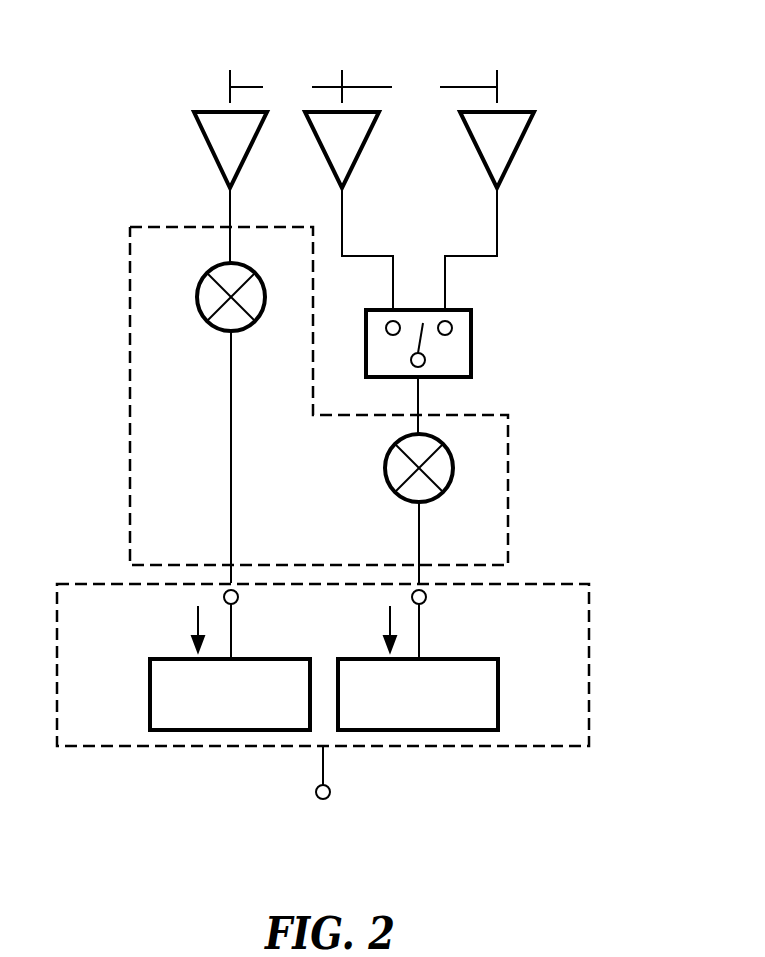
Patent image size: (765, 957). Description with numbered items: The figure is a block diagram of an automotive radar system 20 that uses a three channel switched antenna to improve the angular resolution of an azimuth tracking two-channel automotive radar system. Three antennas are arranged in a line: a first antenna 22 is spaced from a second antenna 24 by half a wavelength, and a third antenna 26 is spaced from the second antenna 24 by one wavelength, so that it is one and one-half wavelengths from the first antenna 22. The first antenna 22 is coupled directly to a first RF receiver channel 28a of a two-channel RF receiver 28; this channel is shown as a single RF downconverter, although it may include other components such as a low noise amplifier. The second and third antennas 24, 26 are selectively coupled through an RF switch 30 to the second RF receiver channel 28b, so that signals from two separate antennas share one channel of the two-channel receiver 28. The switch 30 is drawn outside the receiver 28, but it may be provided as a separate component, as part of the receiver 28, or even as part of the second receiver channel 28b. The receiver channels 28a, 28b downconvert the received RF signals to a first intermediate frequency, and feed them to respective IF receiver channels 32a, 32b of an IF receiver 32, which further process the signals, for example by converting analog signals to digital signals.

The automotive radar system 20 is at (574, 55).
The first antenna 22 is at (207, 140).
The second antenna 24 is at (330, 170).
The third antenna 26 is at (485, 170).
The two-channel RF receiver 28 is at (130, 315).
The first RF receiver channel 28a is at (197, 297).
The second RF receiver channel 28b is at (385, 468).
The RF switch 30 is at (471, 324).
The intermediate frequency (IF) receiver 32 is at (589, 685).
The first IF receiver channel 32a is at (150, 680).
The second IF receiver channel 32b is at (498, 682).